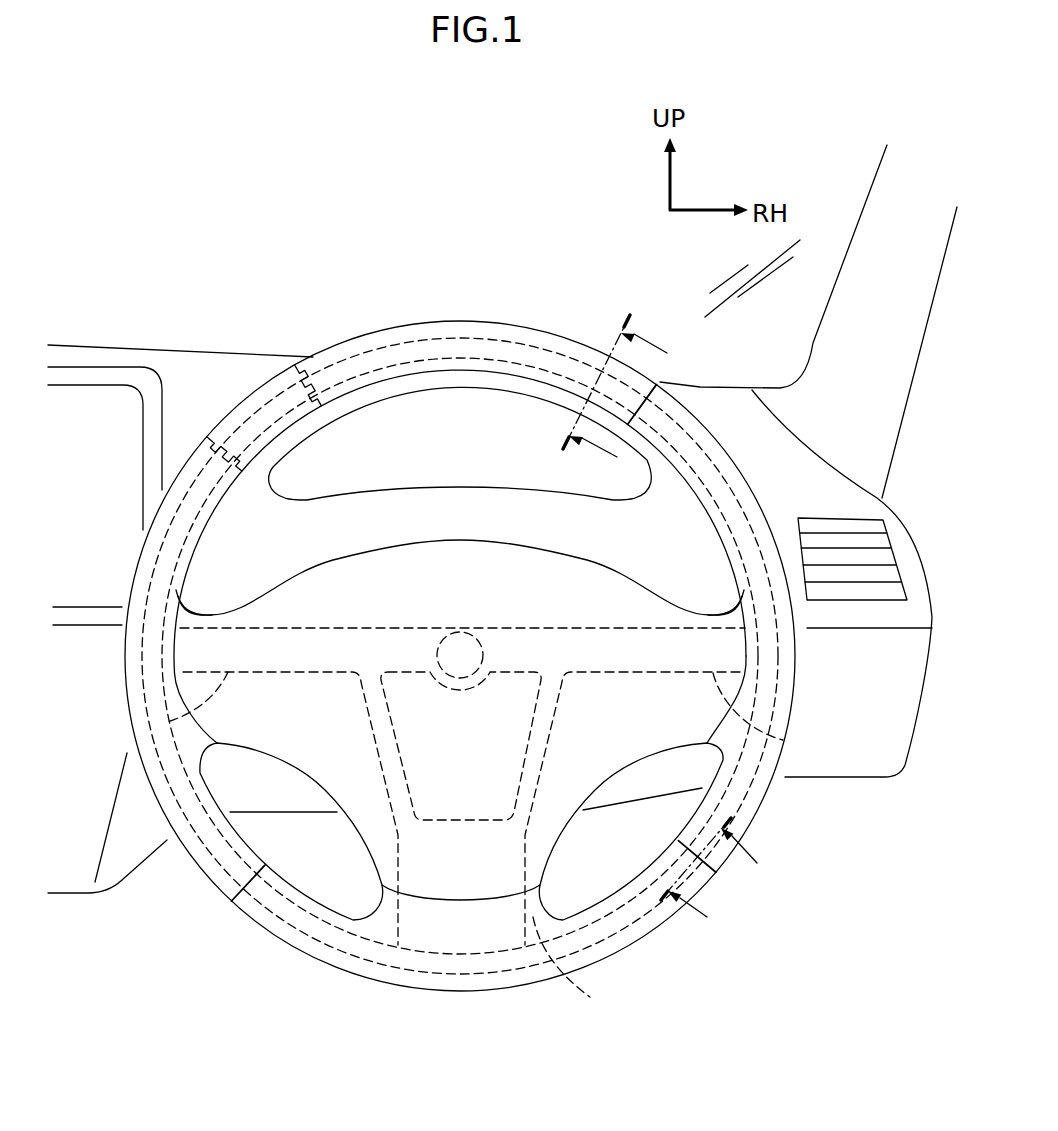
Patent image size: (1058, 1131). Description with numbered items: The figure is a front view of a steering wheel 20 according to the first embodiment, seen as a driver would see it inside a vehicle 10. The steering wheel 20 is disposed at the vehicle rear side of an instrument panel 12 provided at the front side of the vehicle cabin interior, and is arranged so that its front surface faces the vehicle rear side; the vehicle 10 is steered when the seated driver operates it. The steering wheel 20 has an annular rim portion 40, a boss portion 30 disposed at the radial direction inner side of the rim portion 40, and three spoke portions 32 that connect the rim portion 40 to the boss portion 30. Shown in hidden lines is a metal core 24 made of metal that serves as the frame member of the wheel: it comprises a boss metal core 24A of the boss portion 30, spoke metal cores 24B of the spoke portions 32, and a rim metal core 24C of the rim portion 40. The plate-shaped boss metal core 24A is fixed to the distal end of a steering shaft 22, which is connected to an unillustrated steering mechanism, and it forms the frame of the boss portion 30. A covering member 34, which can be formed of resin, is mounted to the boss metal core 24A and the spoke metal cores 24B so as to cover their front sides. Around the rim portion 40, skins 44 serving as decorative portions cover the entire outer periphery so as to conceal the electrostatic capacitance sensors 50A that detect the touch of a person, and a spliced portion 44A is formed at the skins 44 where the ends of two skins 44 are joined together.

The vehicle 10 is at (413, 195).
The instrument panel 12 is at (150, 348).
The steering wheel 20 is at (570, 262).
The steering shaft 22 is at (482, 628).
The metal core 24 is at (421, 614).
The boss metal core 24A is at (567, 630).
The spoke metal core 24B is at (167, 722).
The rim metal core 24C is at (653, 917).
The boss portion 30 is at (468, 530).
The spoke portion 32 is at (224, 600).
The covering member 34 is at (355, 585).
The rim portion 40 is at (365, 322).
The skin 44 is at (437, 318).
The spliced portion 44A is at (670, 408).
The sensor 50A is at (265, 383).